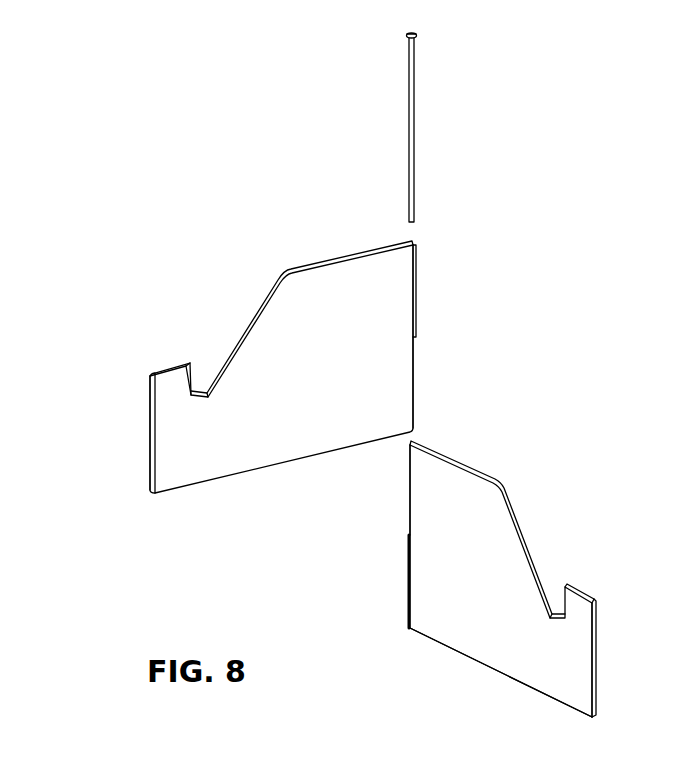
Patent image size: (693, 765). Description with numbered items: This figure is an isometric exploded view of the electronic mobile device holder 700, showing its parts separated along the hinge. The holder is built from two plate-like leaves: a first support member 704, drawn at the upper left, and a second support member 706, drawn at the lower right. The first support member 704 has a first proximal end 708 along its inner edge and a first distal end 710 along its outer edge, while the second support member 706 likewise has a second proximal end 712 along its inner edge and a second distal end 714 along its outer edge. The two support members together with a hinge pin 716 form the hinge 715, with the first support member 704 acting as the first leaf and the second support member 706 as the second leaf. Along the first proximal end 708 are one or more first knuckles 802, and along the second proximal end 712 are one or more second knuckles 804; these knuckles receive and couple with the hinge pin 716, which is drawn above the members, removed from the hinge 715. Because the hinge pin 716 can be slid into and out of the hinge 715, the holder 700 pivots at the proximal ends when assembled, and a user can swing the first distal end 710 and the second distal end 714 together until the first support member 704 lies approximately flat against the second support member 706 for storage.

The electronic mobile device holder 700 is at (590, 187).
The first support member 704 is at (210, 470).
The second support member 706 is at (462, 638).
The first proximal end 708 is at (411, 377).
The first distal end 710 is at (142, 443).
The second proximal end 712 is at (414, 498).
The second distal end 714 is at (600, 638).
The hinge 715 is at (388, 650).
The hinge pin 716 is at (414, 155).
The first knuckles 802 is at (417, 303).
The second knuckles 804 is at (405, 573).